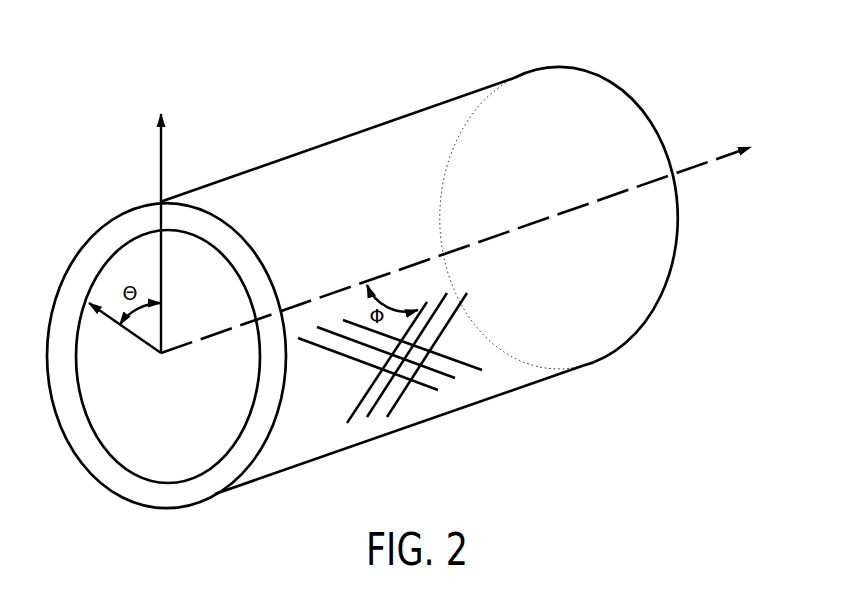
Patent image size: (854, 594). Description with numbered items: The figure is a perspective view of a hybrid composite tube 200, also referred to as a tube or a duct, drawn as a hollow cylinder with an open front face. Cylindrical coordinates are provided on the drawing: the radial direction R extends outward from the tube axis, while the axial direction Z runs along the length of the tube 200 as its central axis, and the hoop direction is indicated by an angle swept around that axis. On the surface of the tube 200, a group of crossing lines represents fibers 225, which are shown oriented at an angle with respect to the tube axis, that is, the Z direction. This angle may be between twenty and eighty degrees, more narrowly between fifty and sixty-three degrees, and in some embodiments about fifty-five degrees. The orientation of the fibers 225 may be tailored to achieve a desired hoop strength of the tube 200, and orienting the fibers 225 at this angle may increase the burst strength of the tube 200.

The hybrid composite tube 200 is at (331, 93).
The fibers 225 is at (467, 322).
The radial direction R is at (161, 219).
The axial direction Z is at (466, 243).